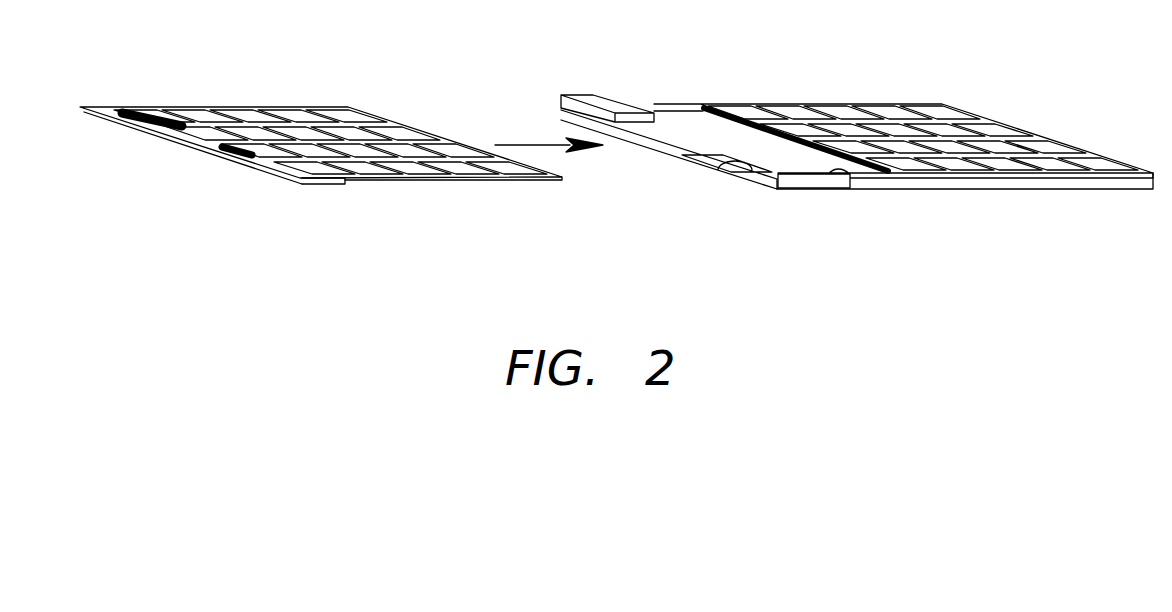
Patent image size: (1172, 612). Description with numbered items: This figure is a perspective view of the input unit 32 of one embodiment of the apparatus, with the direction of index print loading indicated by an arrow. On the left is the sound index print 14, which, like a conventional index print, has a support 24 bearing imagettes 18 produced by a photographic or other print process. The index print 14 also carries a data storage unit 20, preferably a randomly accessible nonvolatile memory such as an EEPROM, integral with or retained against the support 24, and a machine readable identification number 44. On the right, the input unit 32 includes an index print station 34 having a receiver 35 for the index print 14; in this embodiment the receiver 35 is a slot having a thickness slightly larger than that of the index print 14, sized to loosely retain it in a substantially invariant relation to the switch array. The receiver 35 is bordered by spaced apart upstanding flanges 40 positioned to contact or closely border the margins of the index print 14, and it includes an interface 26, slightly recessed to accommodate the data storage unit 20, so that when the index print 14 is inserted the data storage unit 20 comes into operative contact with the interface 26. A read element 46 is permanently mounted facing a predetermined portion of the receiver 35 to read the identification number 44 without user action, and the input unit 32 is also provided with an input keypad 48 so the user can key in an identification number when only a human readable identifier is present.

The sound index print 14 is at (204, 107).
The imagettes 18 is at (370, 122).
The data storage unit 20 is at (338, 184).
The support 24 is at (526, 143).
The interface 26 is at (716, 162).
The input unit 32 is at (850, 105).
The index print station 34 is at (990, 188).
The receiver 35 is at (697, 134).
The upstanding flanges 40 is at (852, 178).
The machine readable identification number 44 is at (216, 150).
The read element 46 is at (598, 100).
The input keypad 48 is at (987, 122).